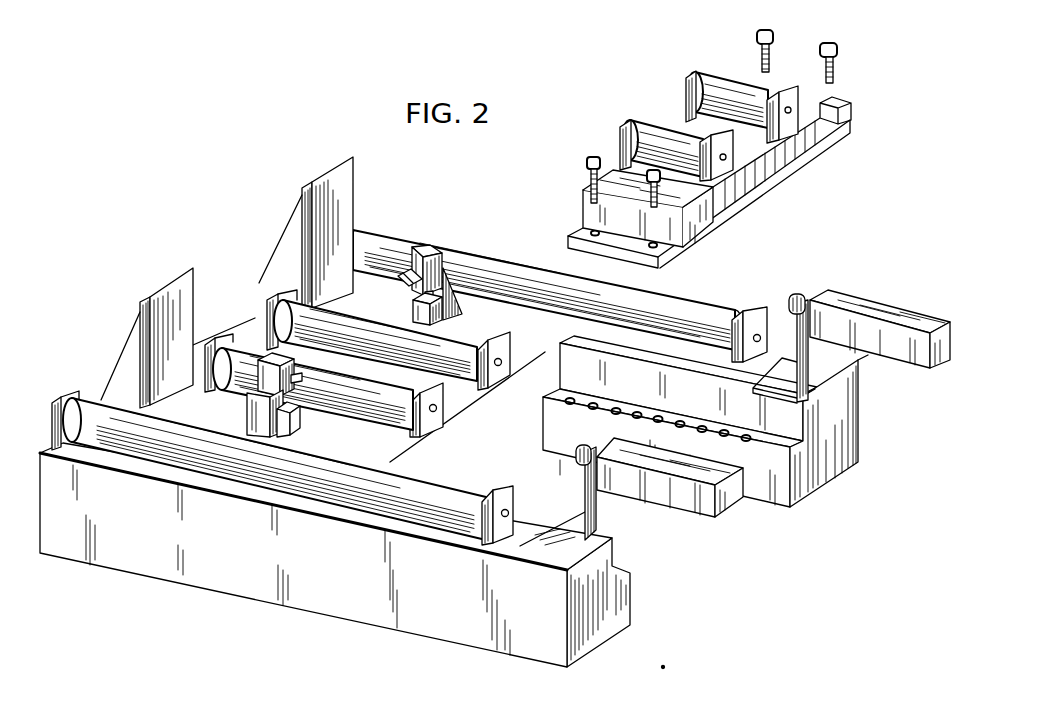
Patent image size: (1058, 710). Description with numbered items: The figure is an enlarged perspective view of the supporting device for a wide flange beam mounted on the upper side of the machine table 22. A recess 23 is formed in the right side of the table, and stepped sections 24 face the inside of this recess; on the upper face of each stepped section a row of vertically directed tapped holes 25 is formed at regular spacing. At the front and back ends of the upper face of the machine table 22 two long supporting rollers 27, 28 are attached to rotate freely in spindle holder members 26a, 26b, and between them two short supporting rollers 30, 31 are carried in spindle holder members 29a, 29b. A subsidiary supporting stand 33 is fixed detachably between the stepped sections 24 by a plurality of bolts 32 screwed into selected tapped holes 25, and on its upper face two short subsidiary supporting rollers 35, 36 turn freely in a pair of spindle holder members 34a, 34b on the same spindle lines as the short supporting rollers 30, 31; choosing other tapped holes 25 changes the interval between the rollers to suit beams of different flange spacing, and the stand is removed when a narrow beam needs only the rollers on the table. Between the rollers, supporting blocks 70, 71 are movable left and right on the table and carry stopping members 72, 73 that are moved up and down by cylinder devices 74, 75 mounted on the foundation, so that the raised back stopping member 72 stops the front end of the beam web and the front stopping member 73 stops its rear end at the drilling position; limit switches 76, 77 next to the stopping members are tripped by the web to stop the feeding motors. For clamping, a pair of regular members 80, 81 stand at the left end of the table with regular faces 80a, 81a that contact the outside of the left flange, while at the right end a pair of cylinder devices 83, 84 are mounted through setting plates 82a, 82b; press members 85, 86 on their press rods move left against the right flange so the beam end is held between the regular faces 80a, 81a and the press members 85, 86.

The machine table 22 is at (170, 577).
The recess 23 is at (547, 357).
The stepped sections 24 is at (788, 441).
The tapped holes 25 is at (745, 428).
The spindle holder member 26a is at (64, 404).
The spindle holder member 26b is at (772, 320).
The long supporting roller 27 is at (452, 527).
The long supporting roller 28 is at (525, 266).
The spindle holder member 29a is at (270, 294).
The spindle holder member 29b is at (492, 377).
The short supporting roller 30 is at (356, 413).
The short supporting roller 31 is at (482, 345).
The bolts 32 is at (822, 55).
The subsidiary supporting stand 33 is at (779, 174).
The spindle holder member 34a is at (628, 125).
The spindle holder member 34b is at (722, 172).
The subsidiary supporting roller 35 is at (657, 112).
The subsidiary supporting roller 36 is at (723, 67).
The supporting block 70 is at (450, 268).
The supporting block 71 is at (247, 412).
The stopping member 72 is at (424, 246).
The stopping member 73 is at (272, 355).
The cylinder device 74 is at (453, 316).
The cylinder device 75 is at (290, 412).
The limit switch 76 is at (412, 288).
The limit switch 77 is at (295, 378).
The regular member 80 is at (158, 278).
The regular face 80a is at (146, 315).
The regular member 81 is at (329, 168).
The regular face 81a is at (352, 190).
The setting plate 82a is at (574, 523).
The setting plate 82b is at (852, 374).
The cylinder device 83 is at (647, 502).
The cylinder device 84 is at (916, 363).
The press member 85 is at (578, 464).
The press member 86 is at (803, 289).